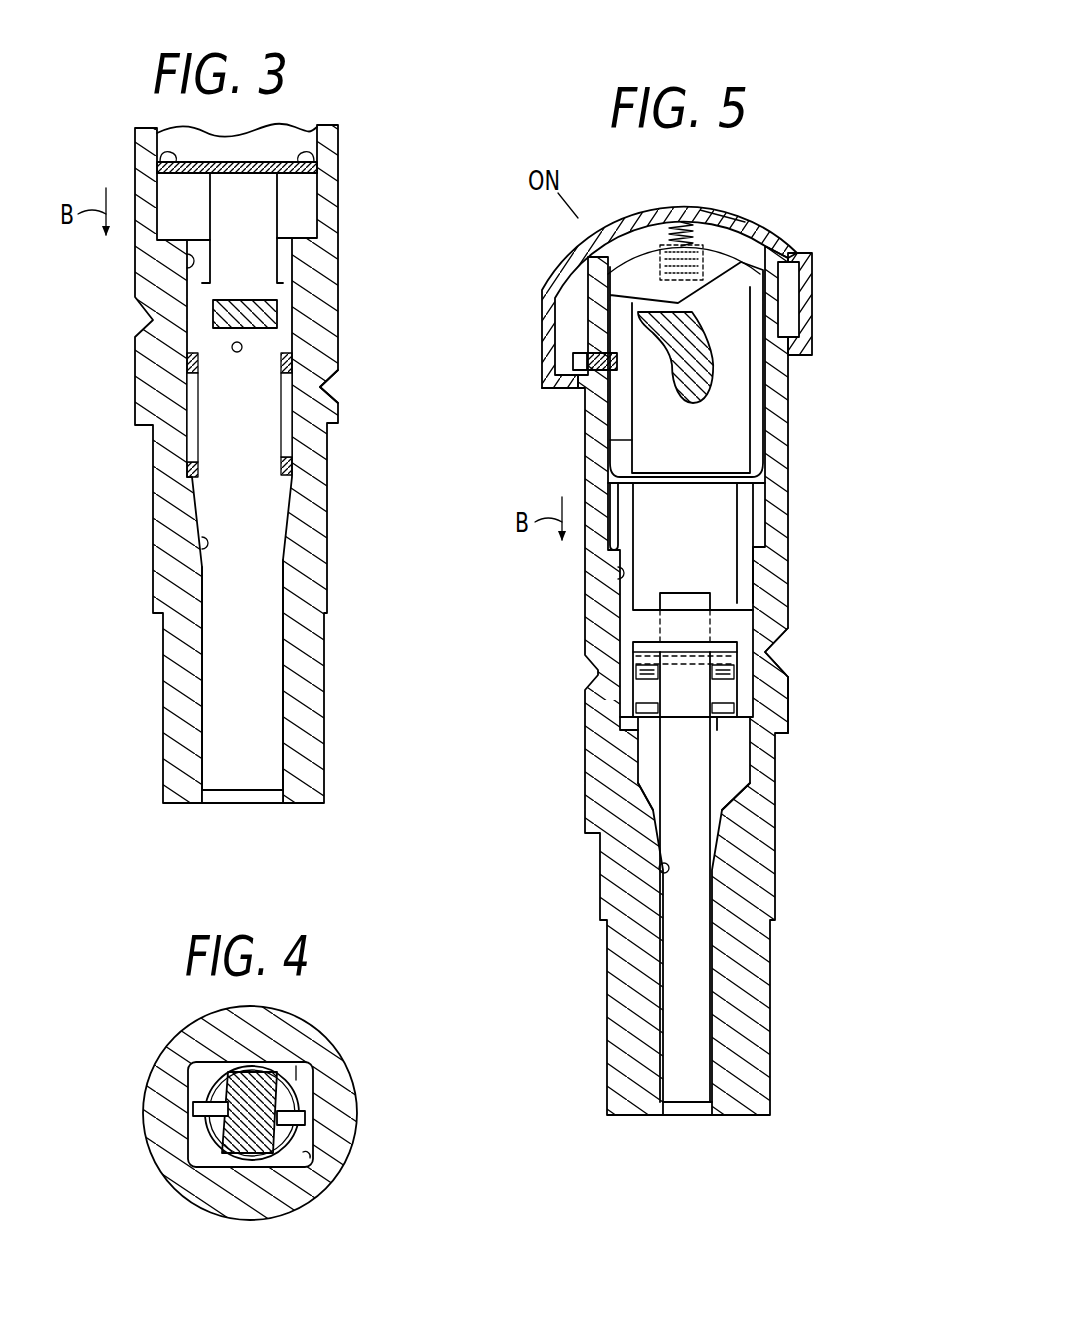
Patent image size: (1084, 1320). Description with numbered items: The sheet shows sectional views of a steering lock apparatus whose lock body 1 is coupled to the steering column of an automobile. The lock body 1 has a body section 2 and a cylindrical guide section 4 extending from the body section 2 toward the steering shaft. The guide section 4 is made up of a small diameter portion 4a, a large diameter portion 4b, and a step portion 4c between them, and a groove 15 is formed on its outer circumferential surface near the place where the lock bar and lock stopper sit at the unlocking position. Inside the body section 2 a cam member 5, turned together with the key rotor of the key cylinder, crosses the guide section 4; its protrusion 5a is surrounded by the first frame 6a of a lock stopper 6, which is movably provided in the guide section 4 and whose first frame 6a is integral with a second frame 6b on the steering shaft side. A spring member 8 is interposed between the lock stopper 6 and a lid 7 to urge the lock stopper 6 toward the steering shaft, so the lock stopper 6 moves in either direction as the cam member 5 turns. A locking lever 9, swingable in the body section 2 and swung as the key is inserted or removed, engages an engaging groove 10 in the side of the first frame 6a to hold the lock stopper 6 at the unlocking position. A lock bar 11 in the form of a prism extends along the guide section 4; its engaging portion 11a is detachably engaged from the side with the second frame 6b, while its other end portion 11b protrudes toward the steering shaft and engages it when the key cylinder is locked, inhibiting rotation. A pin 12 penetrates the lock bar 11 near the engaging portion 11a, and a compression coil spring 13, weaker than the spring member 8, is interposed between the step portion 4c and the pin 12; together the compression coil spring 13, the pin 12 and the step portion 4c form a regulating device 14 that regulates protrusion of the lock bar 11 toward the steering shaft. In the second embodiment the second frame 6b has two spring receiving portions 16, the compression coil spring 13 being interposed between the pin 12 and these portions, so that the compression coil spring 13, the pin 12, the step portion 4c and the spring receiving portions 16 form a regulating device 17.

In FIG. 5, the lock body 1 is at (830, 268).
In FIG. 5, the body section 2 is at (812, 320).
In FIG. 3, the cylindrical guide section 4 is at (338, 160).
In FIG. 4, the cylindrical guide section 4 is at (333, 1147).
In FIG. 5, the cylindrical guide section 4 is at (777, 835).
In FIG. 3, the small diameter portion 4a is at (203, 552).
In FIG. 5, the small diameter portion 4a is at (660, 878).
In FIG. 3, the large diameter portion 4b is at (183, 270).
In FIG. 4, the large diameter portion 4b is at (313, 1167).
In FIG. 5, the large diameter portion 4b is at (618, 573).
In FIG. 4, the step portion 4c is at (300, 1072).
In FIG. 5, the step portion 4c is at (637, 772).
In FIG. 5, the cam member 5 is at (715, 368).
In FIG. 5, the protrusion 5a is at (640, 310).
In FIG. 3, the lock stopper 6 is at (290, 210).
In FIG. 5, the lock stopper 6 is at (750, 523).
In FIG. 5, the first frame 6a is at (620, 447).
In FIG. 3, the second frame 6b is at (277, 314).
In FIG. 5, the second frame 6b is at (635, 623).
In FIG. 5, the lid 7 is at (722, 215).
In FIG. 5, the spring member 8 is at (683, 228).
In FIG. 5, the locking lever 9 is at (575, 362).
In FIG. 5, the engaging groove 10 is at (583, 390).
In FIG. 3, the lock bar 11 is at (265, 587).
In FIG. 4, the lock bar 11 is at (240, 1152).
In FIG. 5, the lock bar 11 is at (700, 815).
In FIG. 3, the engaging portion 11a is at (272, 292).
In FIG. 5, the engaging portion 11a is at (700, 610).
In FIG. 3, the other end portion 11b is at (283, 795).
In FIG. 5, the other end portion 11b is at (690, 1104).
In FIG. 3, the pin 12 is at (232, 347).
In FIG. 4, the pin 12 is at (305, 1118).
In FIG. 5, the pin 12 is at (635, 662).
In FIG. 3, the compression coil spring 13 is at (187, 365).
In FIG. 4, the compression coil spring 13 is at (283, 1090).
In FIG. 5, the compression coil spring 13 is at (636, 690).
In FIG. 3, the regulating device 14 is at (178, 408).
In FIG. 3, the groove 15 is at (325, 385).
In FIG. 5, the groove 15 is at (775, 655).
In FIG. 5, the spring receiving portions 16 is at (638, 723).
In FIG. 5, the regulating device 17 is at (762, 707).